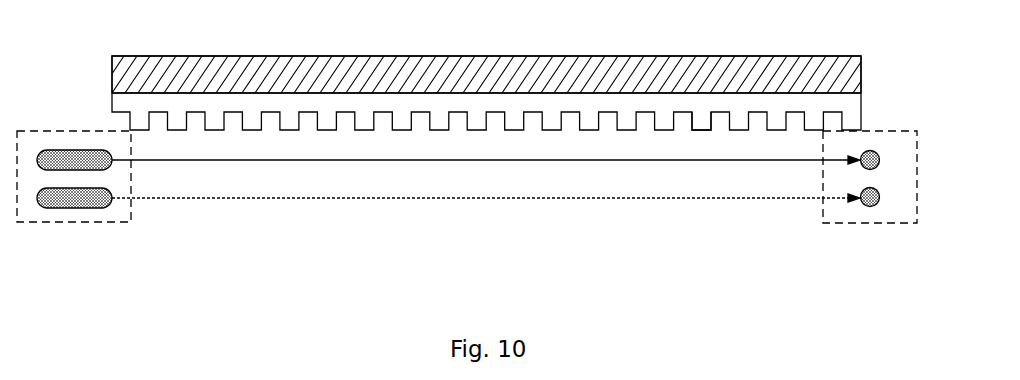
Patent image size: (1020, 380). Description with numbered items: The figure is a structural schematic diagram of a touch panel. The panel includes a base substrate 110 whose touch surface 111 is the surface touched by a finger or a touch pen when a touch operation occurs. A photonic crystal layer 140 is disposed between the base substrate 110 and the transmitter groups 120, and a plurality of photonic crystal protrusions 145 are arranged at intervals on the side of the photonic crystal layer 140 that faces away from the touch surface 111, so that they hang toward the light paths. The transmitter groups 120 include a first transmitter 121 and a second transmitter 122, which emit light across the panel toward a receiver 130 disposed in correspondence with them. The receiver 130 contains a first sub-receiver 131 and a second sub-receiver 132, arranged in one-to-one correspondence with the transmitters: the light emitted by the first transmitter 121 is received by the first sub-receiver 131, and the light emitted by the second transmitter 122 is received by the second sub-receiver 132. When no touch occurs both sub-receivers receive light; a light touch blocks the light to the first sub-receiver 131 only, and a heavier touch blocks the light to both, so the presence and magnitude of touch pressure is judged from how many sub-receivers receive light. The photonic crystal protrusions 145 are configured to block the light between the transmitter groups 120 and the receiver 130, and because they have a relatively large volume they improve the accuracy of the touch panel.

The base substrate 110 is at (233, 57).
The touch surface 111 is at (412, 57).
The photonic crystal layer 140 is at (538, 102).
The photonic crystal protrusions 145 is at (700, 122).
The transmitter groups 120 is at (25, 225).
The first transmitter 121 is at (88, 160).
The second transmitter 122 is at (60, 200).
The receiver 130 is at (832, 223).
The first sub-receiver 131 is at (872, 150).
The second sub-receiver 132 is at (872, 207).